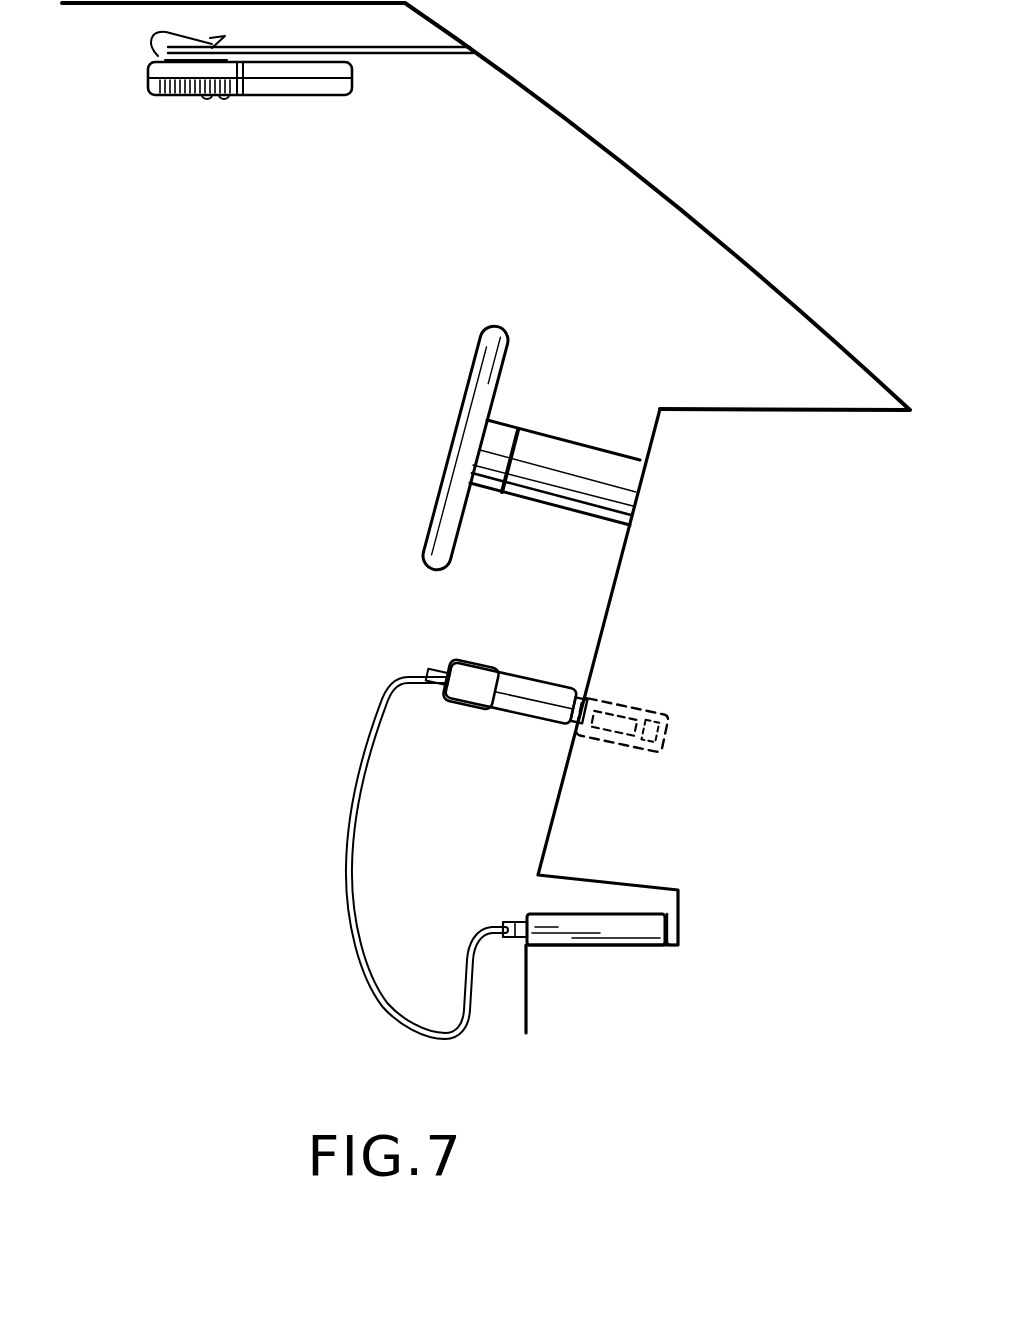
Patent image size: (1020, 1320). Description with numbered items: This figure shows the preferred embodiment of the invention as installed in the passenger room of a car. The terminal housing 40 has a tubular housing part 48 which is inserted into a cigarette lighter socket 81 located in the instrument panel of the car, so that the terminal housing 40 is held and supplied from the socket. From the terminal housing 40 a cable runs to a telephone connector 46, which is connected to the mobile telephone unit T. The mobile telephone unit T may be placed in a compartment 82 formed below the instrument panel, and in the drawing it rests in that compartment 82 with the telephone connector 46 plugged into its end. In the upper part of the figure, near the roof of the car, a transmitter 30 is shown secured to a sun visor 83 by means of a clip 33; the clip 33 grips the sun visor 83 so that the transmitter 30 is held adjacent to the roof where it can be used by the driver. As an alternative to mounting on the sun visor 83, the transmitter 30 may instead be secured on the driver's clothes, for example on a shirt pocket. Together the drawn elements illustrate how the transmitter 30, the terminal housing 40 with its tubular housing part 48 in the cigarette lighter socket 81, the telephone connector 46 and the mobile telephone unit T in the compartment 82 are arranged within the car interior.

The transmitter 30 is at (266, 88).
The clip 33 is at (152, 50).
The sun visor 83 is at (414, 58).
The terminal housing 40 is at (514, 666).
The tubular housing part 48 is at (630, 706).
The cigarette lighter socket 81 is at (667, 703).
The compartment 82 is at (557, 888).
The telephone connector 46 is at (512, 918).
The mobile telephone unit T is at (652, 928).